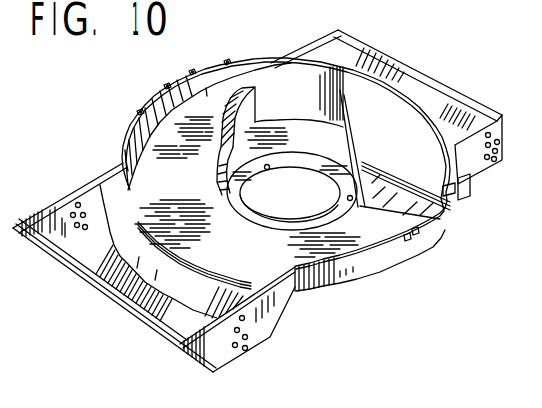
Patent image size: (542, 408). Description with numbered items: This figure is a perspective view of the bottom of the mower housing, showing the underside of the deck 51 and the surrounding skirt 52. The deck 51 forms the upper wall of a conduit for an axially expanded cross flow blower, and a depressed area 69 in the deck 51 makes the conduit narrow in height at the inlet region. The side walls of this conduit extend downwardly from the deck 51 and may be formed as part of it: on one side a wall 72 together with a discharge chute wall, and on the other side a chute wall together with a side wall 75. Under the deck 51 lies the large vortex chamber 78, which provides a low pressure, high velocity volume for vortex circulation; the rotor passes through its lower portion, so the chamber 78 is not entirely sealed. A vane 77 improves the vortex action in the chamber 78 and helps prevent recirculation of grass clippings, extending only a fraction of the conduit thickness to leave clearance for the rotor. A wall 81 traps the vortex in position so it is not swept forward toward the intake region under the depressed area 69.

The deck 51 is at (145, 299).
The skirt 52 is at (134, 116).
The depressed area 69 is at (241, 247).
The wall 72 is at (396, 252).
The side wall 75 is at (198, 92).
The vane 77 is at (350, 140).
The vortex chamber 78 is at (327, 144).
The wall 81 is at (243, 113).